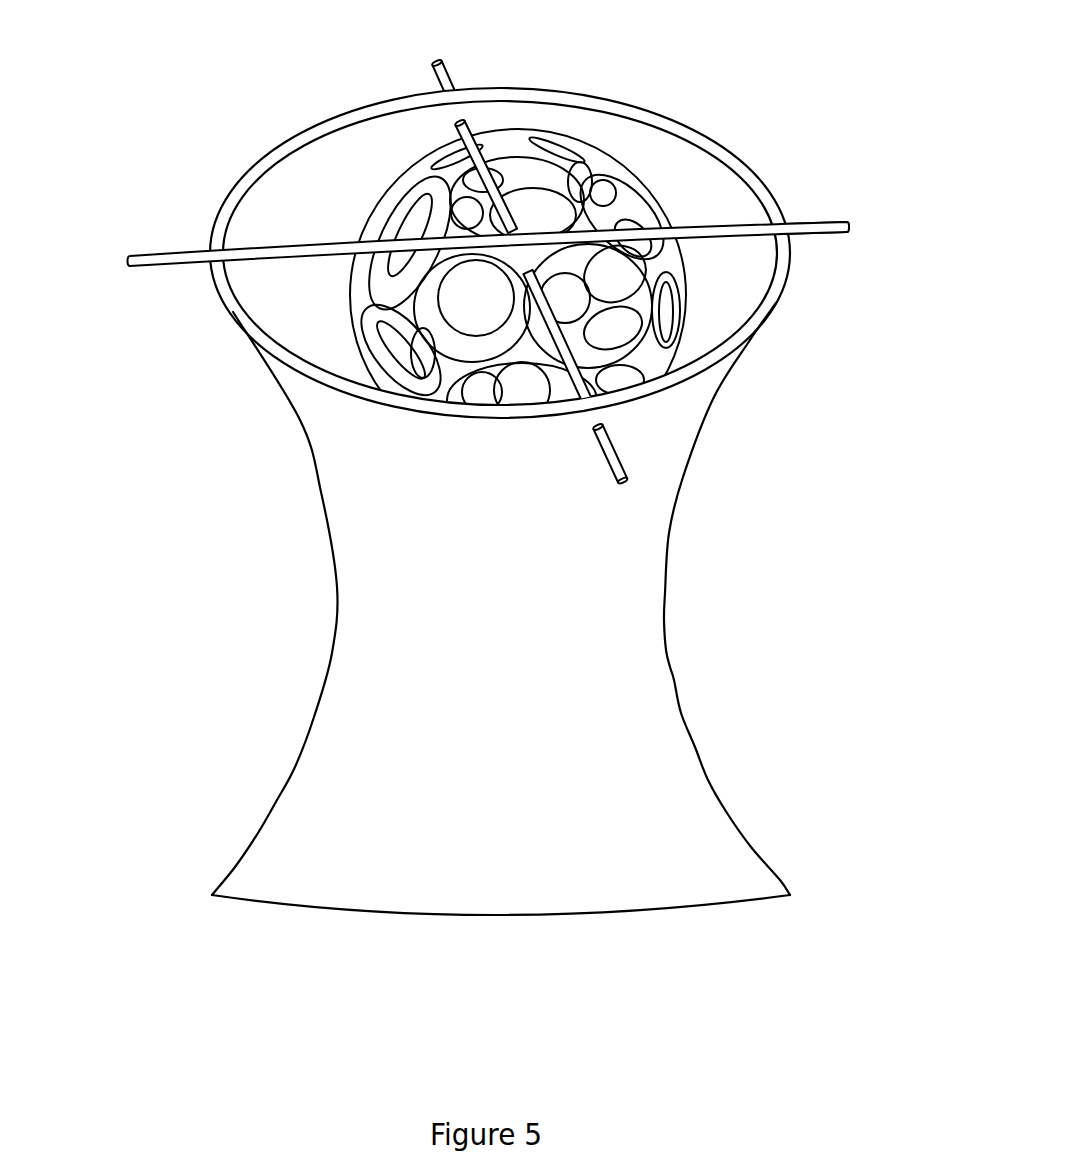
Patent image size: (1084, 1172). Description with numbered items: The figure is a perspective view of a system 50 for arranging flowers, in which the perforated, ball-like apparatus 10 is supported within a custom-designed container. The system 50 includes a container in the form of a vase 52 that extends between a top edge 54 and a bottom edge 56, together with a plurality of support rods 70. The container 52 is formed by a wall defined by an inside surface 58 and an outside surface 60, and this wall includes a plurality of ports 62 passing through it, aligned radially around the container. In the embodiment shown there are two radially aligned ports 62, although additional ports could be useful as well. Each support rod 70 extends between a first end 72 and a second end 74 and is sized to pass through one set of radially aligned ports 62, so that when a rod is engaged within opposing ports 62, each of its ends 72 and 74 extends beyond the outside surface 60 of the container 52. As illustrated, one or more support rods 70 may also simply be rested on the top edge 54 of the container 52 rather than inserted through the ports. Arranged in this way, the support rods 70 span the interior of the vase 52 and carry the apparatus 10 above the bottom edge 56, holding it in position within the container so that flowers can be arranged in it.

The apparatus 10 is at (564, 114).
The system 50 is at (491, 497).
The vase 52 is at (687, 477).
The top edge 54 is at (290, 355).
The bottom edge 56 is at (504, 916).
The inside surface 58 is at (272, 202).
The outside surface 60 is at (321, 492).
The ports 62 is at (470, 122).
The support rods 70 is at (434, 86).
The first end 72 is at (128, 261).
The second end 74 is at (849, 226).